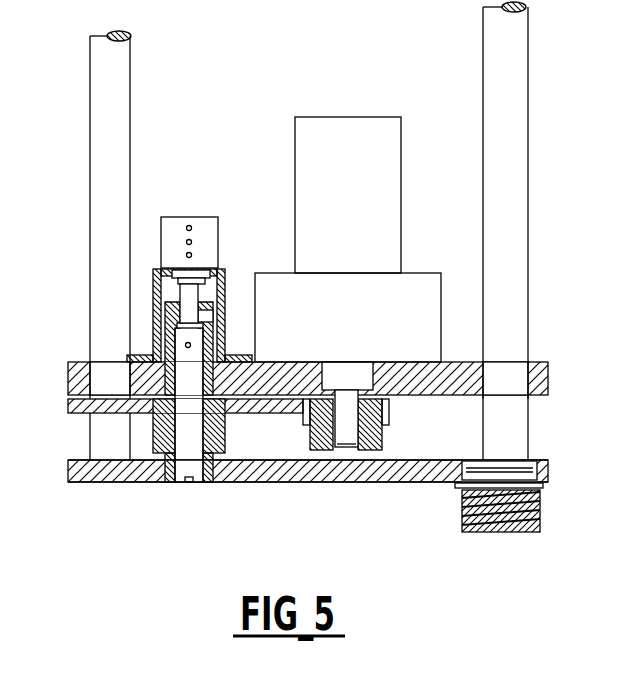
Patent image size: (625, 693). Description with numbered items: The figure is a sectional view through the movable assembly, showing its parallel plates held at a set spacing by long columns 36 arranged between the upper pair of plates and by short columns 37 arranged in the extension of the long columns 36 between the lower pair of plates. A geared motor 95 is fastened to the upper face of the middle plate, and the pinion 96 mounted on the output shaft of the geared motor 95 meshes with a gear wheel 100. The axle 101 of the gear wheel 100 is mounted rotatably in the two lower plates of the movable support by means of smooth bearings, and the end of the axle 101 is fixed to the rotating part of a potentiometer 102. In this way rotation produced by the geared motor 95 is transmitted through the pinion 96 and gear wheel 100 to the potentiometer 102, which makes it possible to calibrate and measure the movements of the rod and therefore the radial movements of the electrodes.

The long columns 36 is at (105, 94).
The short columns 37 is at (103, 438).
The geared motor 95 is at (348, 239).
The pinion 96 is at (381, 446).
The gear wheel 100 is at (222, 440).
The axle 101 is at (191, 440).
The potentiometer 102 is at (178, 228).